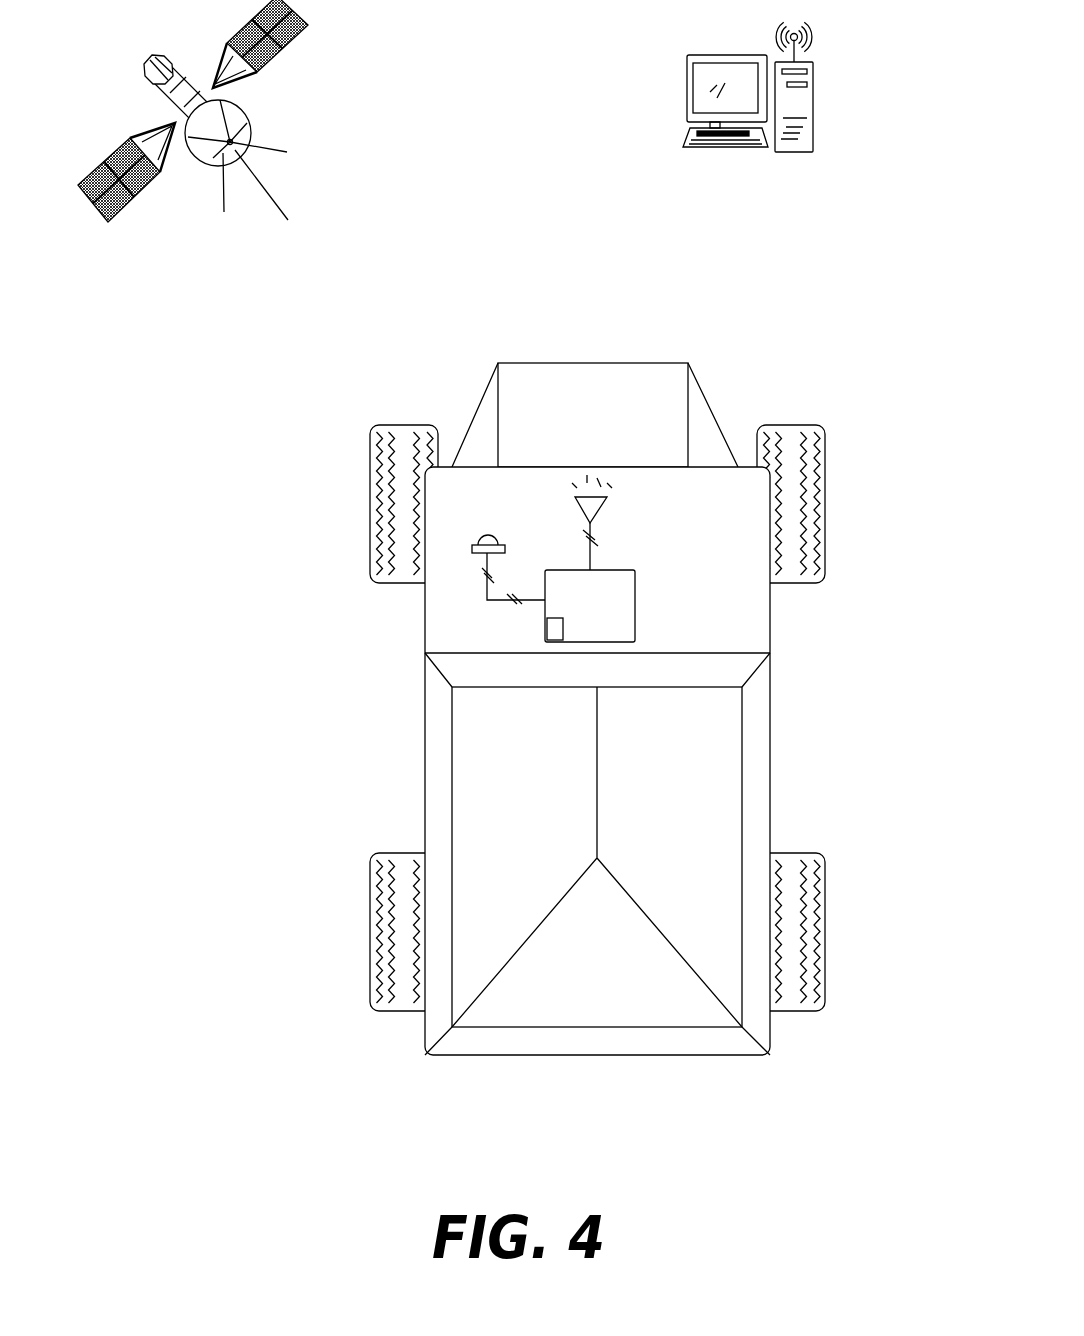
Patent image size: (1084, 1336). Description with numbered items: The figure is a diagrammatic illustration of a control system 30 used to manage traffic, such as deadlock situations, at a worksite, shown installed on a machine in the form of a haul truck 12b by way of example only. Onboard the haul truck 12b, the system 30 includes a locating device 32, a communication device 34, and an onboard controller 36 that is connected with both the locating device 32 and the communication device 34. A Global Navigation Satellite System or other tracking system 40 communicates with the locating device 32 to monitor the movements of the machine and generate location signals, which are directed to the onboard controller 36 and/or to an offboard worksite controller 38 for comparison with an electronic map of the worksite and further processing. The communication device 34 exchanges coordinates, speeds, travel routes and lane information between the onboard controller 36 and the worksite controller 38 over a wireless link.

The haul truck 12b is at (480, 667).
The system 30 is at (427, 709).
The locating device 32 is at (481, 536).
The communication device 34 is at (580, 513).
The onboard controller 36 is at (600, 616).
The worksite controller 38 is at (672, 62).
The tracking system 40 is at (306, 99).